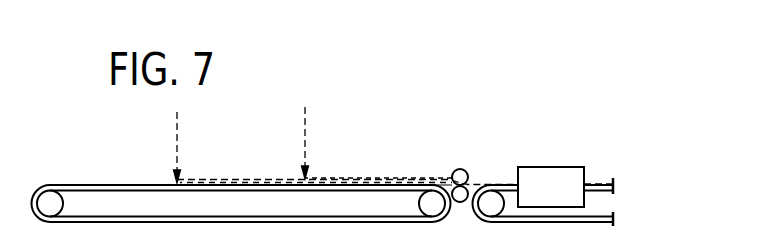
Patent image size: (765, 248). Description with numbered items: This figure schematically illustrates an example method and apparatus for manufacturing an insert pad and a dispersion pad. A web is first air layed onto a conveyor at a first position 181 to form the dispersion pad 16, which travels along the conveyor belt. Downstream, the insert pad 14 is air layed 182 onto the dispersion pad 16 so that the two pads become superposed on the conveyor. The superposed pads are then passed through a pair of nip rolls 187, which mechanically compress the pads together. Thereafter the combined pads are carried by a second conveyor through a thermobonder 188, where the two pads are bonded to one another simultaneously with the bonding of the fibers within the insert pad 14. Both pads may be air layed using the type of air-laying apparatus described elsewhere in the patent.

The insert pad 14 is at (372, 180).
The dispersion pad 16 is at (233, 183).
The first web supply position 181 is at (172, 141).
The air laying of insert pad 182 is at (305, 120).
The nip rolls 187 is at (468, 169).
The thermobonder 188 is at (540, 167).